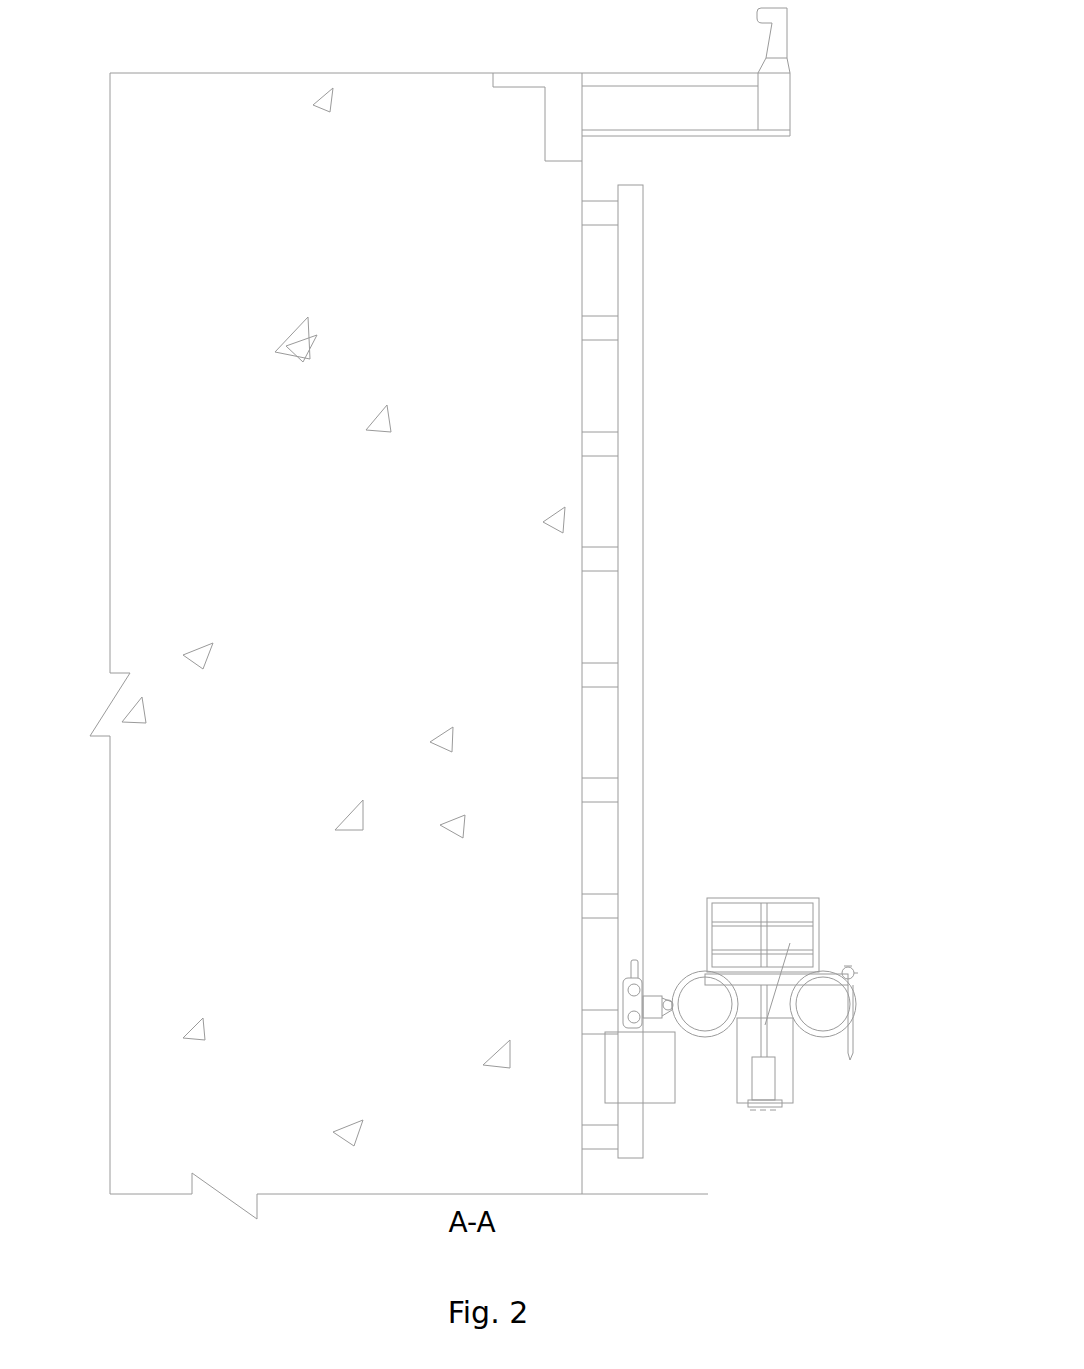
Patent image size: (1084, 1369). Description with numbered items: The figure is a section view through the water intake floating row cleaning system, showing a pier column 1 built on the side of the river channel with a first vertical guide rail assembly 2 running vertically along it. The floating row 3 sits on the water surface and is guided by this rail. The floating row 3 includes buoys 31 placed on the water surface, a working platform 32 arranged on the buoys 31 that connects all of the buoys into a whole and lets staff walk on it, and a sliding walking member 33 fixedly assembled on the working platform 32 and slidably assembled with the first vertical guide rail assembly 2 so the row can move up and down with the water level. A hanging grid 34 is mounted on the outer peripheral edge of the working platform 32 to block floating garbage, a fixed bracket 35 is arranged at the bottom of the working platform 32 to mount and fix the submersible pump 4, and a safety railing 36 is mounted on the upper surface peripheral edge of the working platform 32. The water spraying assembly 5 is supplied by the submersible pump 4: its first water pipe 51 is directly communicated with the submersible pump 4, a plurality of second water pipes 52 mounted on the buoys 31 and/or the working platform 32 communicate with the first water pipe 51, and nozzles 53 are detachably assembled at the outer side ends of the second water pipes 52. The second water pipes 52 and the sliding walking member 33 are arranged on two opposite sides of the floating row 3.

The pier column 1 is at (128, 588).
The first vertical guide rail assembly 2 is at (638, 423).
The floating row 3 is at (733, 812).
The buoy 31 is at (705, 992).
The working platform 32 is at (743, 965).
The sliding walking member 33 is at (650, 1007).
The hanging grid 34 is at (852, 1037).
The fixed bracket 35 is at (737, 1083).
The safety railing 36 is at (755, 900).
The submersible pump 4 is at (780, 1080).
The water spraying assembly 5 is at (895, 907).
The first water pipe 51 is at (765, 1025).
The second water pipe 52 is at (848, 970).
The nozzle 53 is at (855, 973).